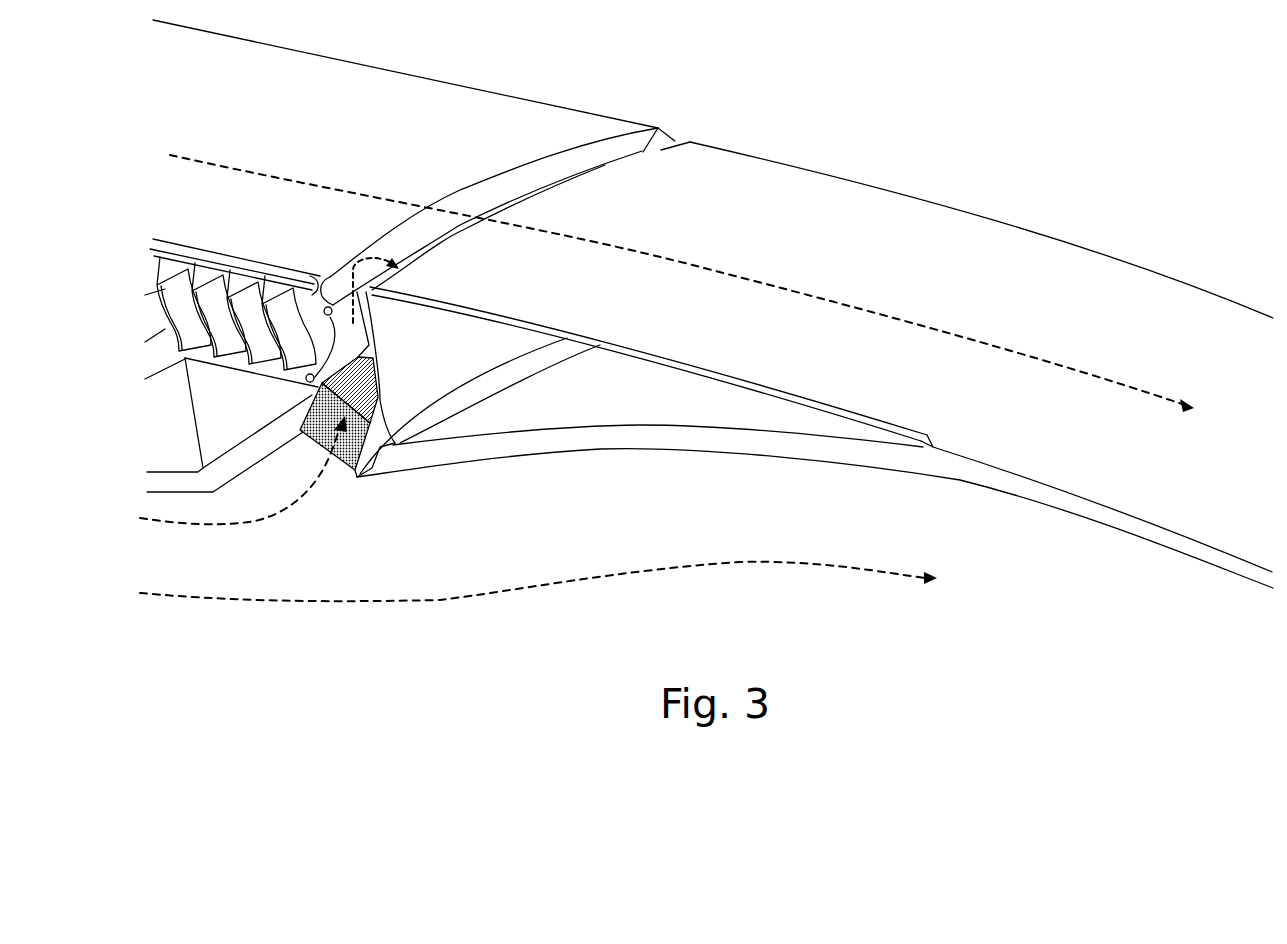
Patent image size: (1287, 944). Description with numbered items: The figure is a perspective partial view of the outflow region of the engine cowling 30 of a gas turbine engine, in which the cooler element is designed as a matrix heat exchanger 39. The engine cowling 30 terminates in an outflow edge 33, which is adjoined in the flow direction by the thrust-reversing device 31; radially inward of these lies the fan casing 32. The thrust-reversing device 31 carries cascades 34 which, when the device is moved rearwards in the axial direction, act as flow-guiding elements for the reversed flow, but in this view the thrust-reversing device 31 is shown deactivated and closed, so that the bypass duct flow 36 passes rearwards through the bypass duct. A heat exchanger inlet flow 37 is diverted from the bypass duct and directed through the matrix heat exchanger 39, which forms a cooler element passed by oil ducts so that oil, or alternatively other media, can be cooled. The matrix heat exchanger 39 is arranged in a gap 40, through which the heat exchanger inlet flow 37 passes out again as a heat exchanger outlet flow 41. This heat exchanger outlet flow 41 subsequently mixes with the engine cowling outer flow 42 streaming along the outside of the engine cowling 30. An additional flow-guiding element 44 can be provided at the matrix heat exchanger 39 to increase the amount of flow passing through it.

The engine cowling 30 is at (453, 117).
The thrust-reversing device 31 is at (896, 230).
The fan casing 32 is at (230, 401).
The outflow edge 33 is at (660, 131).
The cascades 34 is at (160, 293).
The bypass duct flow 36 is at (740, 563).
The heat exchanger inlet flow 37 is at (220, 530).
The matrix heat exchanger 39 is at (367, 478).
The gap 40 is at (417, 237).
The heat exchanger outlet flow 41 is at (357, 265).
The engine cowling outer flow 42 is at (1011, 353).
The flow-guiding element 44 is at (378, 441).